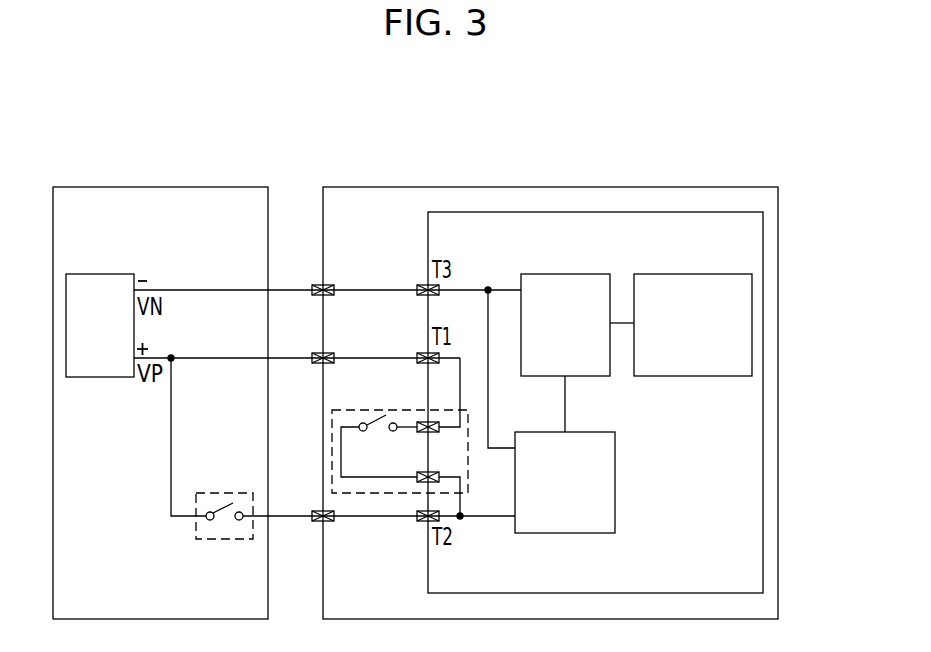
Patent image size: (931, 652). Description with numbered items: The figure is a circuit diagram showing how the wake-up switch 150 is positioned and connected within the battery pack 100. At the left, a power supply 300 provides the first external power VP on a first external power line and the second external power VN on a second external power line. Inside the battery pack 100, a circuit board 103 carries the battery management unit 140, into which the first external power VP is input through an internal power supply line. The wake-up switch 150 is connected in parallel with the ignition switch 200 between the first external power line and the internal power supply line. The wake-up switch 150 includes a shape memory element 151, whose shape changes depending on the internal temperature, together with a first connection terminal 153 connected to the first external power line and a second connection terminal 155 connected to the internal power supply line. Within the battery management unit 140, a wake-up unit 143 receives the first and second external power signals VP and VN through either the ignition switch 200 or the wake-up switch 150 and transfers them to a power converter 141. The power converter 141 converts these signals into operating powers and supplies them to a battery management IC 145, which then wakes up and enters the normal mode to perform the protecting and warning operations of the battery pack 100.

The battery pack 100 is at (673, 187).
The circuit board 103 is at (560, 199).
The battery management unit 140 is at (763, 330).
The power converter 141 is at (563, 273).
The wake-up unit 143 is at (565, 536).
The battery management IC 145 is at (692, 273).
The wake-up switch 150 is at (373, 460).
The shape memory element 151 is at (372, 417).
The first connection terminal 153 is at (421, 422).
The second connection terminal 155 is at (424, 482).
The ignition switch 200 is at (225, 541).
The power supply 300 is at (99, 274).